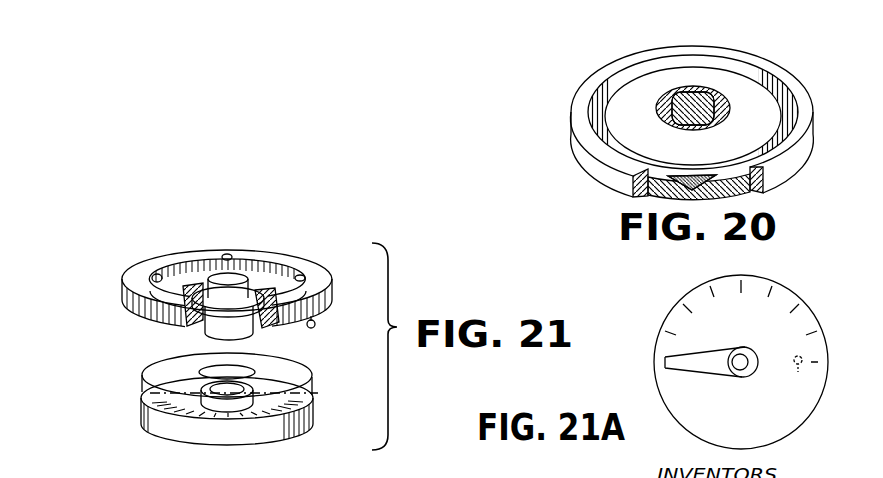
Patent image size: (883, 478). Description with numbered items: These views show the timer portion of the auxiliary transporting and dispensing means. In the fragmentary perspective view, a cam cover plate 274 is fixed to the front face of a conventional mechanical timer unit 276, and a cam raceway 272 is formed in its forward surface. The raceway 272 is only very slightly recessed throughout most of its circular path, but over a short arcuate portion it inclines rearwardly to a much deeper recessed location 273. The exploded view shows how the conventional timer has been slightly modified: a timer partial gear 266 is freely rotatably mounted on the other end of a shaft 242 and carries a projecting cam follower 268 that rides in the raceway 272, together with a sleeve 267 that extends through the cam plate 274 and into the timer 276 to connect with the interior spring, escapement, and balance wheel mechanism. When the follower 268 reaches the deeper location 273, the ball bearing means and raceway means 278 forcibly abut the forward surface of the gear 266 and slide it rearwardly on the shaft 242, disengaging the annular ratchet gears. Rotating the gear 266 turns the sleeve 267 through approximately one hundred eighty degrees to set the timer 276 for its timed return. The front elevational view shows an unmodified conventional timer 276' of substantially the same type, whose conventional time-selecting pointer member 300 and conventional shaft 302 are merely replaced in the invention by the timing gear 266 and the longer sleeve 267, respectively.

In FIG. 20, the shaft 242 is at (700, 98).
In FIG. 20, the cam raceway 272 is at (773, 88).
In FIG. 20, the cam cover plate 274 is at (577, 150).
In FIG. 21, the cam cover plate 274 is at (138, 380).
In FIG. 20, the sleeve 267 is at (682, 128).
In FIG. 21, the sleeve 267 is at (230, 328).
In FIG. 20, the deeper recessed location 273 is at (722, 194).
In FIG. 21, the ball bearing means and raceway means 278 is at (238, 247).
In FIG. 21, the timer partial gear 266 is at (122, 293).
In FIG. 21, the cam follower 268 is at (307, 328).
In FIG. 21, the mechanical timer unit 276 is at (188, 411).
In FIG. 21A, the conventional timer 276' is at (709, 361).
In FIG. 21A, the time-selecting pointer member 300 is at (718, 372).
In FIG. 21A, the shaft 302 is at (747, 371).